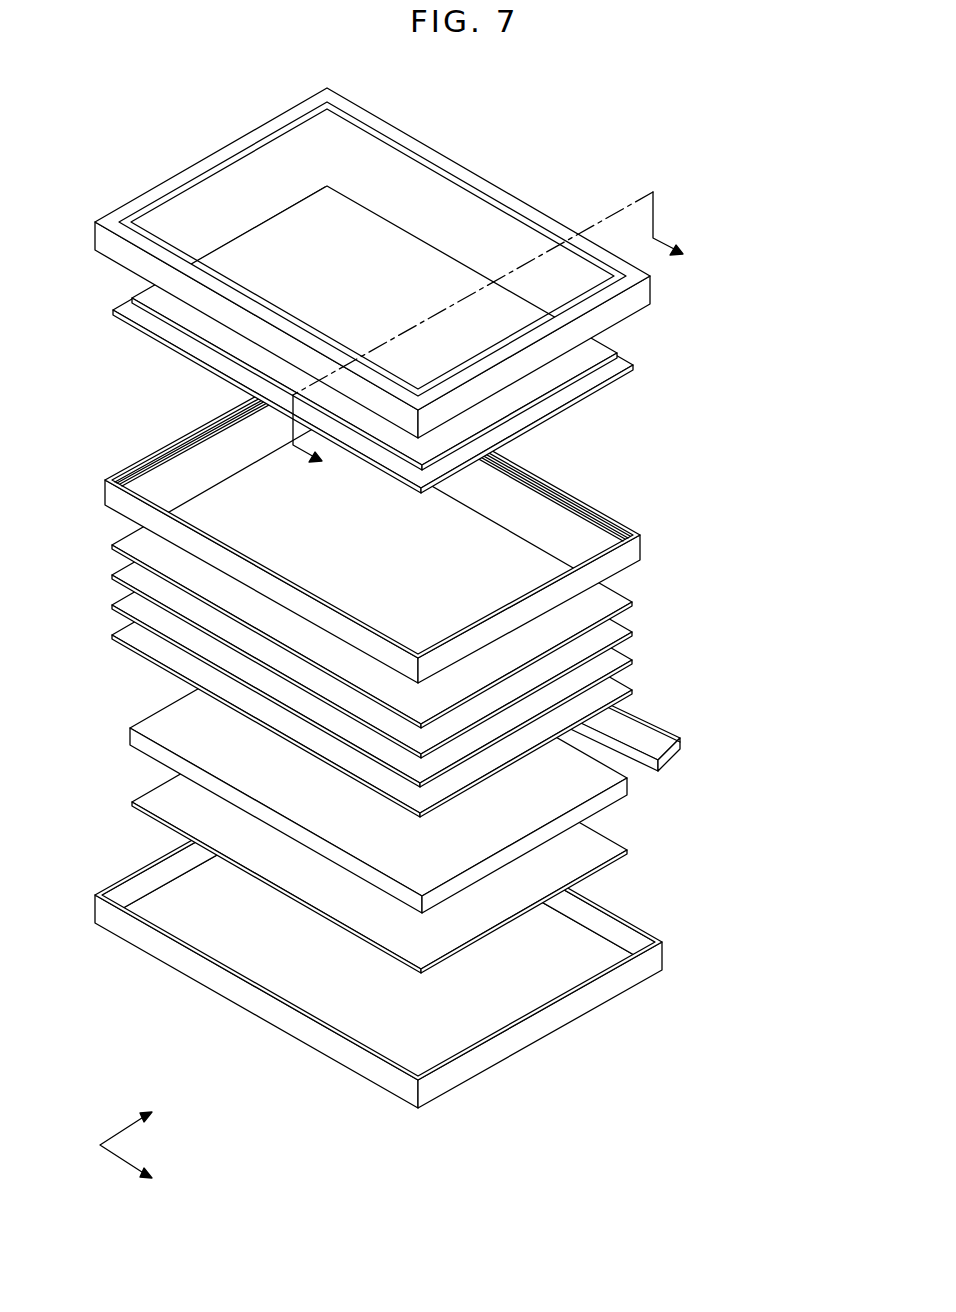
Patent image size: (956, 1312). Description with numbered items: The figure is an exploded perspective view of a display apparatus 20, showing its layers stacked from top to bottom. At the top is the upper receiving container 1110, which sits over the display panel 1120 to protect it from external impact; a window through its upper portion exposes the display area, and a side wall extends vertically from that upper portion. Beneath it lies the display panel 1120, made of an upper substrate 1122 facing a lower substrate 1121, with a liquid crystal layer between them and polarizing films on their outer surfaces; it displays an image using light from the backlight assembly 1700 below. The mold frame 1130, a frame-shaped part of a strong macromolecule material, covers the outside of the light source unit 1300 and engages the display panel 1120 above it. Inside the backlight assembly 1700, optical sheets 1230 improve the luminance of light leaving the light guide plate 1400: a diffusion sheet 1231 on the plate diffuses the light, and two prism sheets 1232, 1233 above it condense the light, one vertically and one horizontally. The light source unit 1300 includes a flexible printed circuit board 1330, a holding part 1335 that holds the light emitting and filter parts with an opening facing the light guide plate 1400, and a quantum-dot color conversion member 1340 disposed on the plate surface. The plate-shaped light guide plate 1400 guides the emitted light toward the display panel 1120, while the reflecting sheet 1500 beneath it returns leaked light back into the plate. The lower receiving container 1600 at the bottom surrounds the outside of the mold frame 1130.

The display apparatus 20 is at (479, 633).
The upper receiving container 1110 is at (652, 291).
The display panel 1120 is at (431, 339).
The upper substrate 1122 is at (595, 357).
The lower substrate 1121 is at (592, 382).
The mold frame 1130 is at (642, 546).
The optical sheets 1230 is at (436, 605).
The prism sheet 1233 is at (633, 599).
The prism sheet 1232 is at (633, 629).
The diffusion sheet 1231 is at (633, 657).
The light source unit 1300 is at (461, 664).
The color conversion member 1340 is at (750, 796).
The holding part 1335 is at (655, 743).
The flexible printed circuit board 1330 is at (683, 762).
The light guide plate 1400 is at (628, 778).
The reflecting sheet 1500 is at (424, 948).
The lower receiving container 1600 is at (664, 958).
The backlight assembly 1700 is at (479, 765).